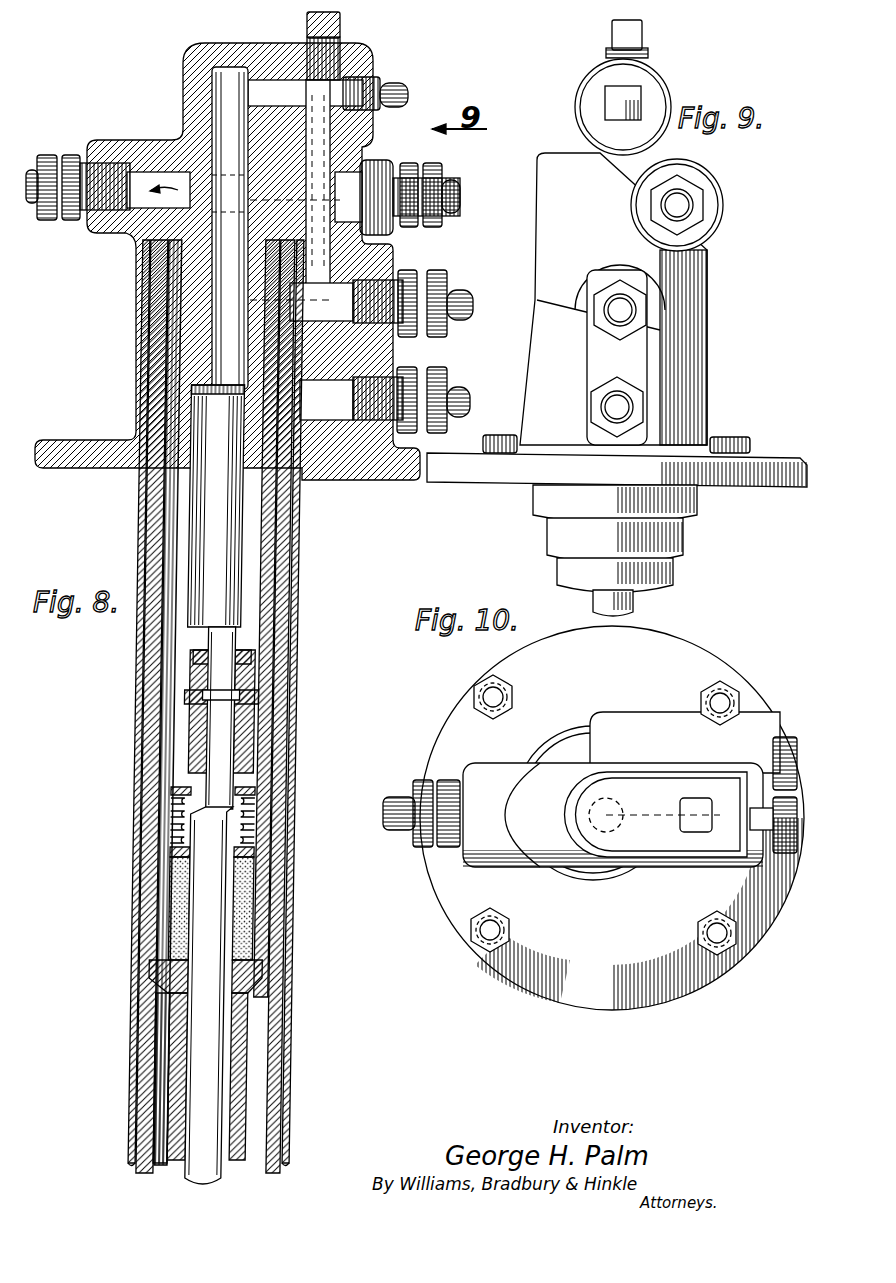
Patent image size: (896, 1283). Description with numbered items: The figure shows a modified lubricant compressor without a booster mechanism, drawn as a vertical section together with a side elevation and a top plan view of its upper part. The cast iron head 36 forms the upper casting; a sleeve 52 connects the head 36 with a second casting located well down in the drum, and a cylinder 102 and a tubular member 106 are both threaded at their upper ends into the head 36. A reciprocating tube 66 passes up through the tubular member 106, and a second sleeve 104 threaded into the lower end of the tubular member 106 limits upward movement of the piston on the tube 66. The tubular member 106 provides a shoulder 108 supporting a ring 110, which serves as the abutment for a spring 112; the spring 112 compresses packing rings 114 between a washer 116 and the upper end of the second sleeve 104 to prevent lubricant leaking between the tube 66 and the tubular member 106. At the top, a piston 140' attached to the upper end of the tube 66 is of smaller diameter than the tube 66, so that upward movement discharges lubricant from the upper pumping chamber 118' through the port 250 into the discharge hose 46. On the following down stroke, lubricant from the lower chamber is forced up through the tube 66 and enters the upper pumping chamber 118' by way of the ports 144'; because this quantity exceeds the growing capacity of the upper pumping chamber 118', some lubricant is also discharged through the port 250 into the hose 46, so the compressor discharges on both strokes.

In FIG. 8, the head 36 is at (131, 386).
In FIG. 9, the head 36 is at (698, 400).
In FIG. 10, the head 36 is at (595, 898).
In FIG. 8, the hose 46 is at (70, 156).
In FIG. 10, the hose 46 is at (447, 782).
In FIG. 8, the sleeve 52 is at (303, 590).
In FIG. 9, the sleeve 52 is at (697, 503).
In FIG. 8, the tube 66 is at (203, 1088).
In FIG. 8, the cylinder 102 is at (290, 673).
In FIG. 9, the cylinder 102 is at (690, 541).
In FIG. 8, the second sleeve 104 is at (245, 1073).
In FIG. 8, the tubular member 106 is at (267, 954).
In FIG. 9, the tubular member 106 is at (678, 575).
In FIG. 8, the shoulder 108 is at (270, 783).
In FIG. 8, the ring 110 is at (262, 800).
In FIG. 8, the spring 112 is at (250, 840).
In FIG. 8, the packing rings 114 is at (148, 925).
In FIG. 8, the washer 116 is at (175, 846).
In FIG. 8, the upper pumping chamber 118' is at (279, 506).
In FIG. 8, the piston 140' is at (167, 300).
In FIG. 9, the piston 140' is at (649, 599).
In FIG. 8, the ports 144' is at (272, 711).
In FIG. 8, the port 250 is at (141, 177).